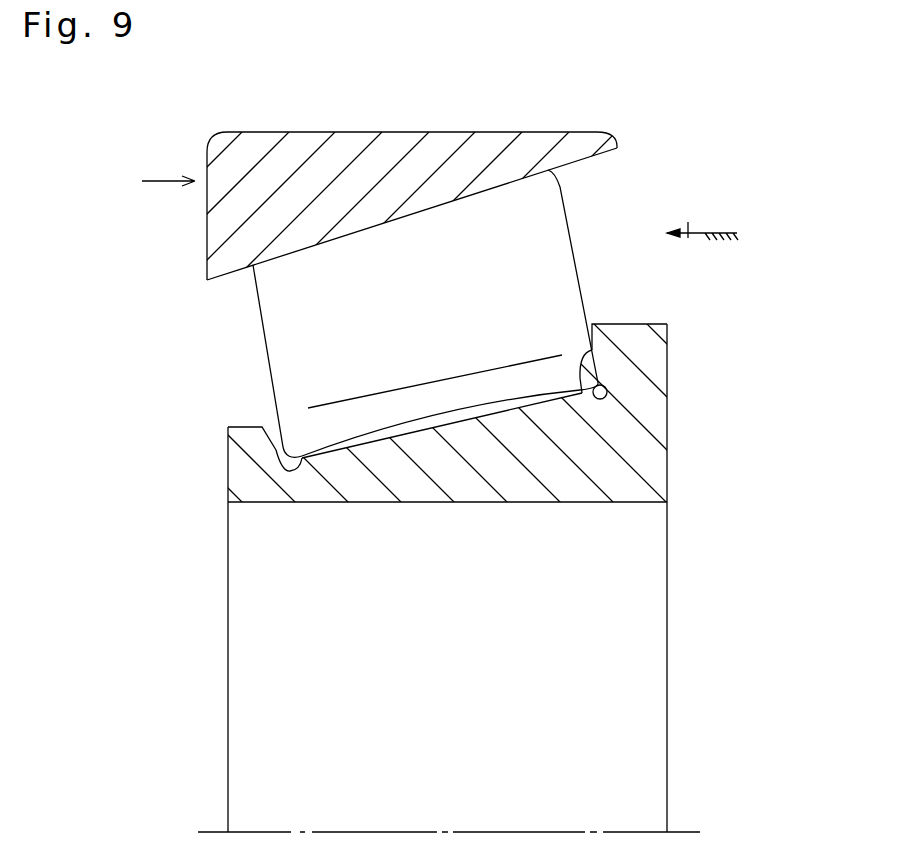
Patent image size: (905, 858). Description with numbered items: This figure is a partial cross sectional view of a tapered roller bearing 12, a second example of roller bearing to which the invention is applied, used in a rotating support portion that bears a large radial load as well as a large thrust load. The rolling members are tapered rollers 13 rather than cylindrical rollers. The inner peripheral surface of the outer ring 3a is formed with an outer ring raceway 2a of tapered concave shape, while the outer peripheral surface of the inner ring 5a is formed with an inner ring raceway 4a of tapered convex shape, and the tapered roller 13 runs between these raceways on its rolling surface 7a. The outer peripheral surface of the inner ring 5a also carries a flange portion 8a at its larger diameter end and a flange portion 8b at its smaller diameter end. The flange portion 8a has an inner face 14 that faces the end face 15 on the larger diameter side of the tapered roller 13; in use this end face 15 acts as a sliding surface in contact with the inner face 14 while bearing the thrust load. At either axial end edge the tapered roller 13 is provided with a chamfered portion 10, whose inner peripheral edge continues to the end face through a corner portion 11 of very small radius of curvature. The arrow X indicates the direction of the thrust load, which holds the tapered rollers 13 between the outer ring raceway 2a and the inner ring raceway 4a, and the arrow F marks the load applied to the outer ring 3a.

The outer ring 3a is at (228, 227).
The rolling surface 7a is at (385, 222).
The tapered roller 13 is at (543, 203).
The end face on larger diameter side 15 is at (573, 247).
The outer ring raceway 2a is at (297, 253).
The corner portion 11 is at (283, 448).
The inner ring 5a is at (578, 495).
The inner ring raceway 4a is at (363, 440).
The flange portion 8a is at (640, 332).
The flange portion 8b is at (245, 433).
The chamfered portion 10 is at (287, 472).
The inner face 14 is at (603, 400).
The tapered roller bearing 12 is at (671, 502).
The applied load F is at (160, 181).
The thrust load direction arrow X is at (698, 233).